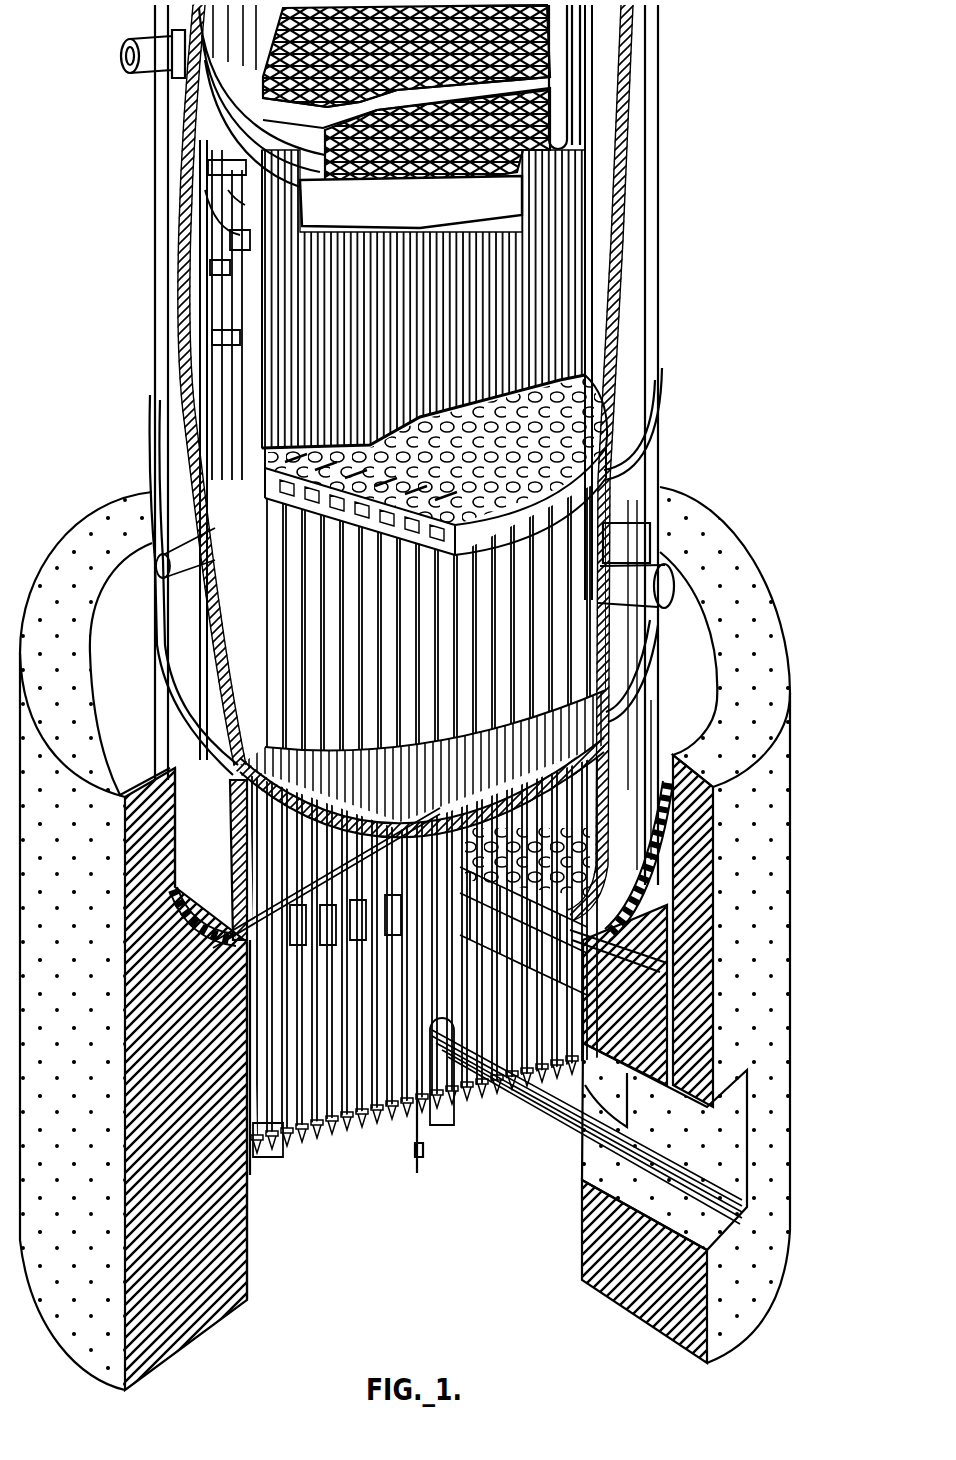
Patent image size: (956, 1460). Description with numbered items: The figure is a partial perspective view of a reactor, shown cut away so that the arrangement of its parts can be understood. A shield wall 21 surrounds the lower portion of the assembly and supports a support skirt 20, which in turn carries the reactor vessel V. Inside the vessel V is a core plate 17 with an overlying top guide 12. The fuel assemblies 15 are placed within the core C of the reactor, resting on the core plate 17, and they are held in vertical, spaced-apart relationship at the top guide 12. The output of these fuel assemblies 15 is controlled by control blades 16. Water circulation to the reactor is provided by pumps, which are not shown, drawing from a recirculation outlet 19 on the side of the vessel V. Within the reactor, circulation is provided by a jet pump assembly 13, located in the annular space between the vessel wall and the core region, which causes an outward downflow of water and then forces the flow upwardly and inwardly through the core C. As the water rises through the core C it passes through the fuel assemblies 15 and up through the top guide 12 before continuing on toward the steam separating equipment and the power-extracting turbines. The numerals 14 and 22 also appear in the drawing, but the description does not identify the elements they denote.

The reactor vessel V is at (148, 145).
The core C is at (530, 258).
The top guide 12 is at (466, 230).
The jet pump assembly 13 is at (228, 430).
The core barrel 14 is at (598, 167).
The fuel assemblies 15 is at (385, 313).
The control blades 16 is at (518, 378).
The core plate 17 is at (560, 507).
The recirculation outlet 19 is at (660, 550).
The support skirt 20 is at (620, 818).
The shield wall 21 is at (657, 1036).
The instrumentation tubes 22 is at (327, 1087).